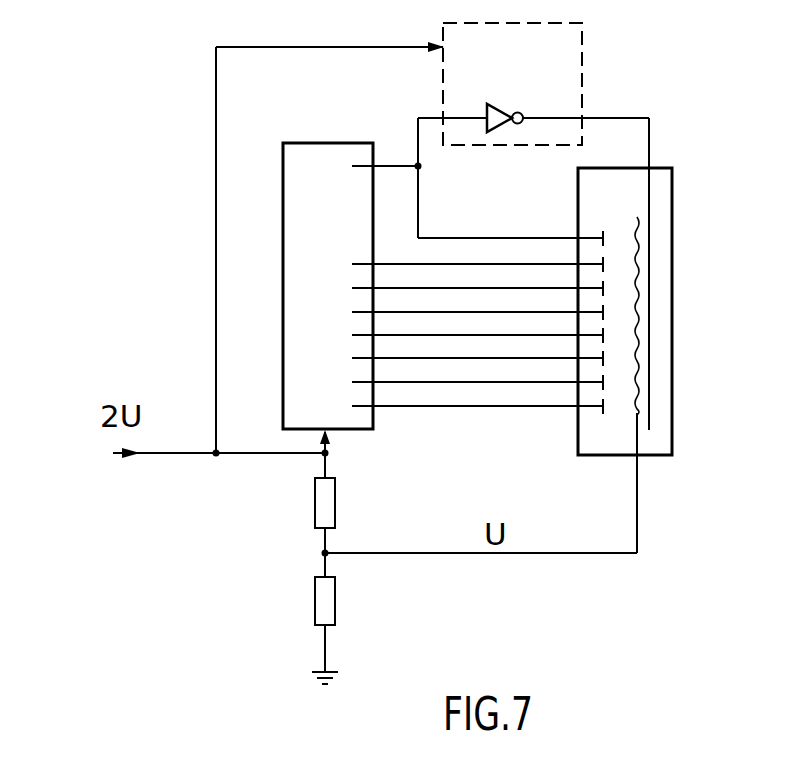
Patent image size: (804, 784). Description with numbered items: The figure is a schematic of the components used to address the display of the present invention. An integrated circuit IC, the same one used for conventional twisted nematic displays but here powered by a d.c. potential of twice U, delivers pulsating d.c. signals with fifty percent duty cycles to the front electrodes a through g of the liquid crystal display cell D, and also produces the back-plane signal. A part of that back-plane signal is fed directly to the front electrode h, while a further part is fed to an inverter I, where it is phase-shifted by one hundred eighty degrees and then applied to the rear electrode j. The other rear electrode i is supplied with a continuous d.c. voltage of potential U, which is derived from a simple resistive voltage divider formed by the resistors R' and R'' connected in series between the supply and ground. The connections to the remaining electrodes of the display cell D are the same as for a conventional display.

The inverter I is at (565, 53).
The integrated circuit IC is at (295, 192).
The liquid crystal display cell D is at (672, 337).
The rear electrode j is at (649, 230).
The rear electrode i is at (638, 418).
The resistor of voltage divider R' is at (344, 503).
The resistor of voltage divider R'' is at (348, 601).